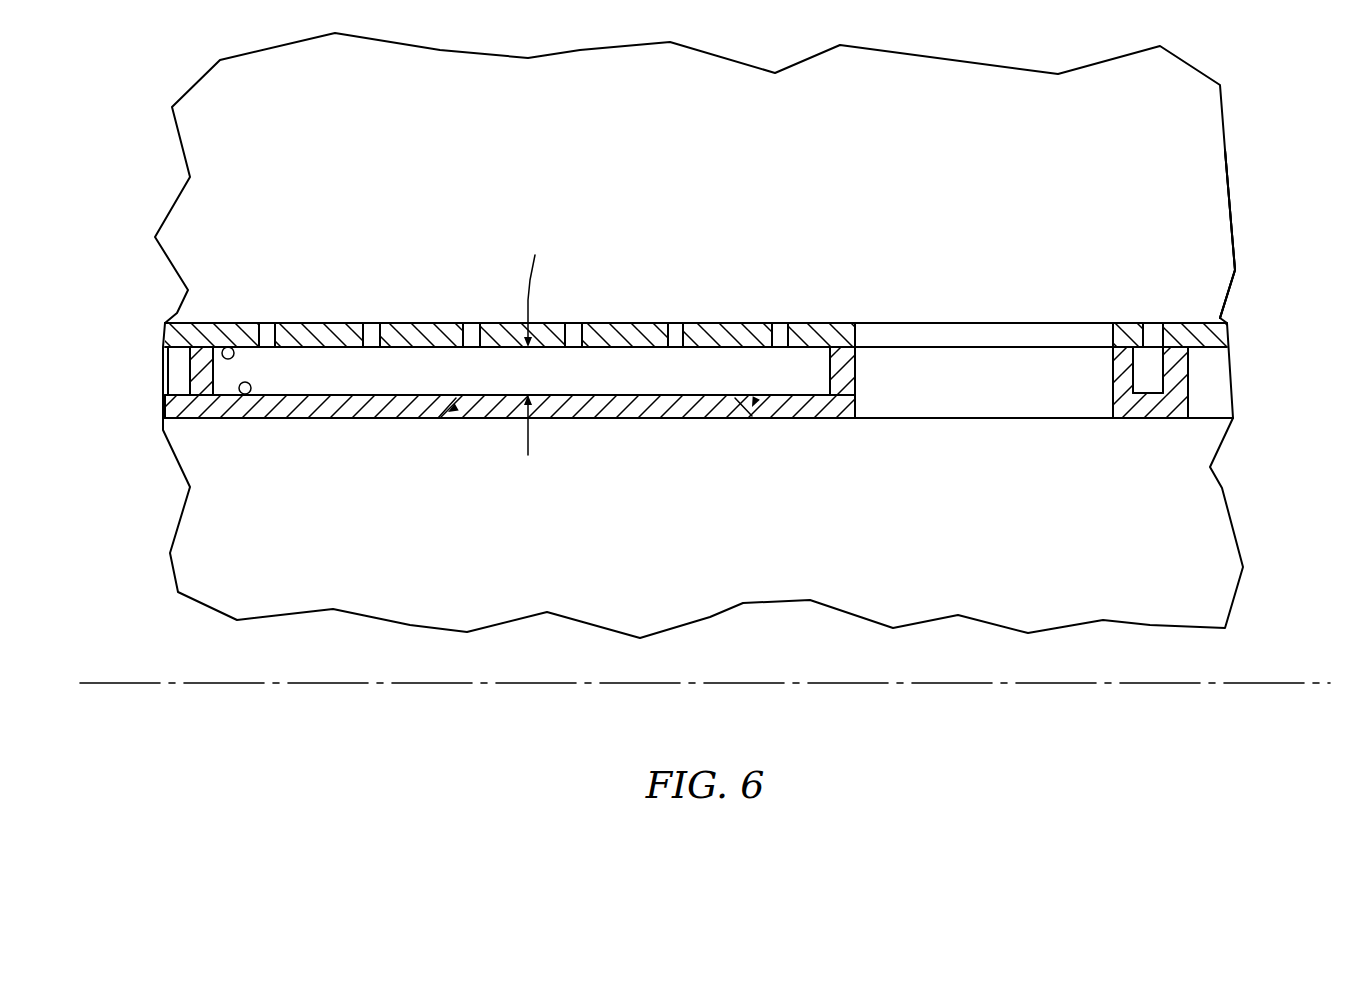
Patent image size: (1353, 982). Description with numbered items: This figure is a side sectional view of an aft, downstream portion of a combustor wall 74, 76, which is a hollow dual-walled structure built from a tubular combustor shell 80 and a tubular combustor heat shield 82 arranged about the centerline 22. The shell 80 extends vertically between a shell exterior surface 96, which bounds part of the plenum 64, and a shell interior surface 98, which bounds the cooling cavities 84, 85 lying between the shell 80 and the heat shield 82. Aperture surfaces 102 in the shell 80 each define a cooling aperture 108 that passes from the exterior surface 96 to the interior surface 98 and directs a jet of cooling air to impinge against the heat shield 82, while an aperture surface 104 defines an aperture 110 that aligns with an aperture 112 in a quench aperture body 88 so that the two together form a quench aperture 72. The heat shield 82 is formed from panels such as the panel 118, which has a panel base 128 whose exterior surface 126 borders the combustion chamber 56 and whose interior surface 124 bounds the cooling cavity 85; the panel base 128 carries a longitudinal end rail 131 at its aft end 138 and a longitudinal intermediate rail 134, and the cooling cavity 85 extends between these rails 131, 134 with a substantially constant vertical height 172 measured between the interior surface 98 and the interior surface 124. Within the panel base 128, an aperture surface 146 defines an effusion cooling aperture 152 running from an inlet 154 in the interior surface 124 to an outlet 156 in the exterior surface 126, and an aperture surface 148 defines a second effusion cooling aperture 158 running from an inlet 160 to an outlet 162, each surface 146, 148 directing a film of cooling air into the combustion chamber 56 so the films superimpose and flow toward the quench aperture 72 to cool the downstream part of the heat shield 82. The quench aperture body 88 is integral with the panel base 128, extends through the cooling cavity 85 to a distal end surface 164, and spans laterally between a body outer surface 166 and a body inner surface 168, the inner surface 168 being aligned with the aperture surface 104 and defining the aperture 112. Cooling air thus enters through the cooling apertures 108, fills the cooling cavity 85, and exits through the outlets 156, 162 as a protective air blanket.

The centerline 22 is at (1133, 685).
The combustion chamber 56 is at (659, 607).
The plenum 64 is at (671, 109).
The quench aperture 72 is at (978, 404).
The inner combustor wall 74 is at (1247, 298).
The outer combustor wall 76 is at (1227, 234).
The combustor shell 80 is at (628, 318).
The combustor heat shield 82 is at (643, 432).
The cooling cavity 84 is at (178, 372).
The cooling cavity 85 is at (322, 395).
The quench aperture body 88 is at (845, 373).
The shell exterior surface 96 is at (243, 323).
The shell interior surface 98 is at (226, 347).
The aperture surface 102 is at (268, 335).
The aperture surface 104 is at (857, 336).
The cooling aperture 108 is at (468, 324).
The aperture 110 is at (1056, 332).
The aperture 112 is at (1052, 400).
The panel 118 is at (510, 382).
The panel interior surface 124 is at (245, 394).
The panel exterior surface 126 is at (210, 420).
The panel base 128 is at (580, 420).
The longitudinal end rail 131 is at (1190, 370).
The longitudinal intermediate rail 134 is at (170, 382).
The aft end 138 is at (1190, 393).
The aperture surface 146 is at (745, 420).
The aperture surface 148 is at (443, 422).
The cooling aperture 152 is at (755, 400).
The inlet 154 is at (742, 413).
The outlet 156 is at (748, 420).
The cooling aperture 158 is at (452, 410).
The inlet 160 is at (448, 406).
The outlet 162 is at (450, 420).
The distal end surface 164 is at (1123, 335).
The body outer surface 166 is at (1140, 372).
The body inner surface 168 is at (1112, 388).
The vertical height 172 is at (535, 338).